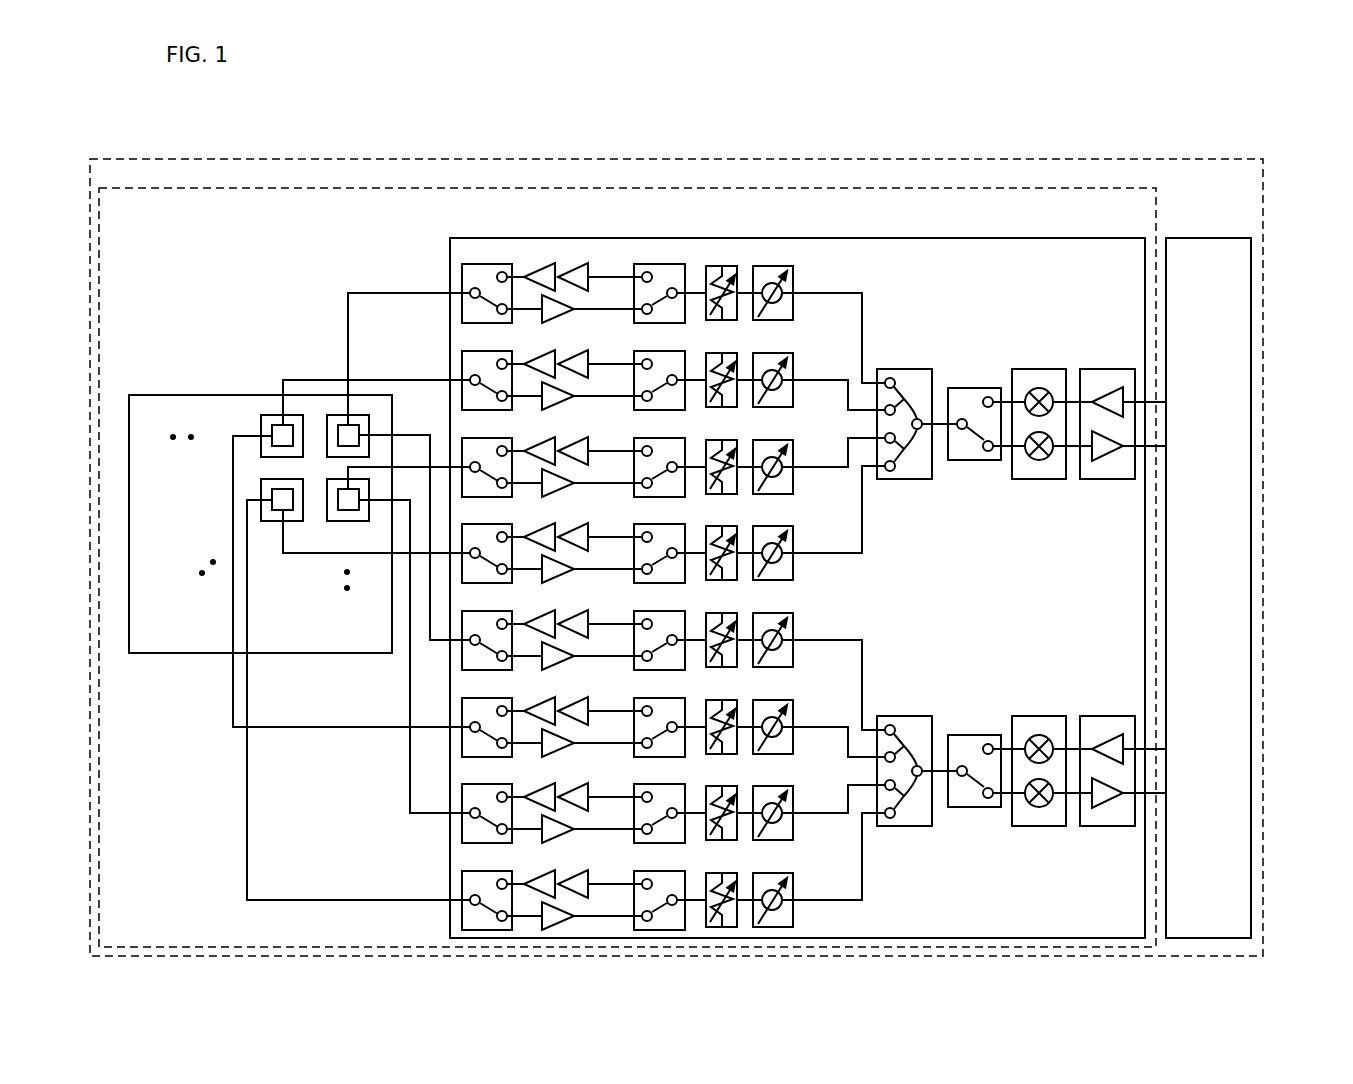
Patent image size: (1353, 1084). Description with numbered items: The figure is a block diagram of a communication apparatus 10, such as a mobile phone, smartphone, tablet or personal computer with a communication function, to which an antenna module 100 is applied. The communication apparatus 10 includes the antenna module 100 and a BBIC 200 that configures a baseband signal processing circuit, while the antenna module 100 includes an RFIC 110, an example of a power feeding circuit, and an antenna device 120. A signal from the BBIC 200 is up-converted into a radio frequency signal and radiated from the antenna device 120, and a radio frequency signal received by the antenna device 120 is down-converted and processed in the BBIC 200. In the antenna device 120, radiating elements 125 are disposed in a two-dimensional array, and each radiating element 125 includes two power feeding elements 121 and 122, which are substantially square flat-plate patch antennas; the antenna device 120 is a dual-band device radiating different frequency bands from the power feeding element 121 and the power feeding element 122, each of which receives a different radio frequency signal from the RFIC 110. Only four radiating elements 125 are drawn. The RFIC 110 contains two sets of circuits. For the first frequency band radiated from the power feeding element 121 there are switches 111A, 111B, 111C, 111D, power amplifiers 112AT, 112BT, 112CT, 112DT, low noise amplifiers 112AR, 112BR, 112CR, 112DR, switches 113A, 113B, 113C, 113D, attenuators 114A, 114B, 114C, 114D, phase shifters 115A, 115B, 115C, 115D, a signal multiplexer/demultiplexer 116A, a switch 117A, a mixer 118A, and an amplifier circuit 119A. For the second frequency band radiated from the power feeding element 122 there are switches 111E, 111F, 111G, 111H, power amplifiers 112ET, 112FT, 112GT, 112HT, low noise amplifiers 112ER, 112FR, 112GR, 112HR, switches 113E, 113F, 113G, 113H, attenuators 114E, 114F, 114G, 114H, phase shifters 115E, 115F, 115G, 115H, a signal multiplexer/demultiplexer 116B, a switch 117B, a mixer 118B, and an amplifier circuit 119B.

The communication apparatus 10 is at (1263, 181).
The antenna module 100 is at (1096, 191).
The RFIC 110 is at (1096, 240).
The antenna device 120 is at (186, 395).
The power feeding element 121 is at (285, 416).
The power feeding element 122 is at (342, 416).
The radiating element 125 is at (307, 396).
The BBIC 200 is at (1191, 240).
The switch 111A is at (502, 283).
The switch 111B is at (502, 370).
The switch 111C is at (502, 457).
The switch 111D is at (502, 543).
The switch 111E is at (502, 630).
The switch 111F is at (502, 717).
The switch 111G is at (502, 803).
The switch 111H is at (502, 890).
The power amplifier 112AT is at (585, 267).
The power amplifier 112BT is at (585, 354).
The power amplifier 112CT is at (585, 441).
The power amplifier 112DT is at (585, 527).
The power amplifier 112ET is at (585, 614).
The power amplifier 112FT is at (585, 701).
The power amplifier 112GT is at (585, 787).
The power amplifier 112HT is at (585, 874).
The low noise amplifier 112AR is at (592, 306).
The low noise amplifier 112BR is at (592, 393).
The low noise amplifier 112CR is at (592, 480).
The low noise amplifier 112DR is at (592, 566).
The low noise amplifier 112ER is at (592, 653).
The low noise amplifier 112FR is at (592, 740).
The low noise amplifier 112GR is at (592, 826).
The low noise amplifier 112HR is at (592, 913).
The switch 113A is at (676, 283).
The switch 113B is at (676, 370).
The switch 113C is at (676, 457).
The switch 113D is at (676, 543).
The switch 113E is at (676, 630).
The switch 113F is at (676, 717).
The switch 113G is at (676, 803).
The switch 113H is at (676, 890).
The attenuator 114A is at (747, 281).
The attenuator 114B is at (746, 368).
The attenuator 114C is at (746, 455).
The attenuator 114D is at (746, 541).
The attenuator 114E is at (746, 628).
The attenuator 114F is at (746, 715).
The attenuator 114G is at (746, 801).
The attenuator 114H is at (746, 888).
The phase shifter 115A is at (796, 307).
The phase shifter 115B is at (796, 394).
The phase shifter 115C is at (796, 481).
The phase shifter 115D is at (807, 555).
The phase shifter 115E is at (796, 654).
The phase shifter 115F is at (796, 741).
The phase shifter 115G is at (796, 827).
The phase shifter 115H is at (807, 902).
The signal multiplexer/demultiplexer 116A is at (905, 369).
The signal multiplexer/demultiplexer 116B is at (917, 752).
The switch 117A is at (973, 388).
The switch 117B is at (986, 752).
The mixer 118A is at (1039, 369).
The mixer 118B is at (1052, 752).
The amplifier circuit 119A is at (1107, 369).
The amplifier circuit 119B is at (1123, 752).